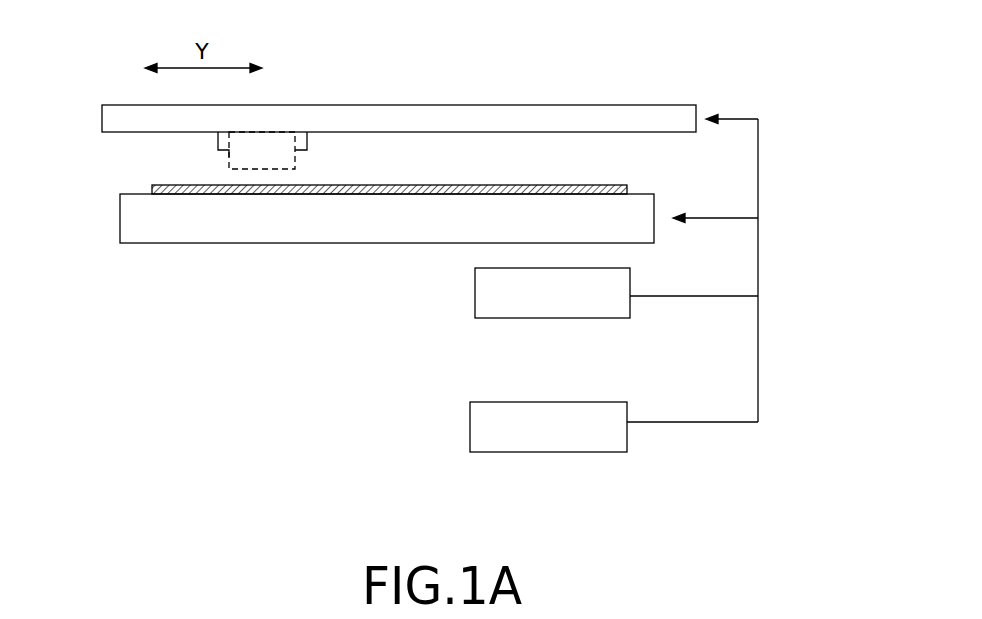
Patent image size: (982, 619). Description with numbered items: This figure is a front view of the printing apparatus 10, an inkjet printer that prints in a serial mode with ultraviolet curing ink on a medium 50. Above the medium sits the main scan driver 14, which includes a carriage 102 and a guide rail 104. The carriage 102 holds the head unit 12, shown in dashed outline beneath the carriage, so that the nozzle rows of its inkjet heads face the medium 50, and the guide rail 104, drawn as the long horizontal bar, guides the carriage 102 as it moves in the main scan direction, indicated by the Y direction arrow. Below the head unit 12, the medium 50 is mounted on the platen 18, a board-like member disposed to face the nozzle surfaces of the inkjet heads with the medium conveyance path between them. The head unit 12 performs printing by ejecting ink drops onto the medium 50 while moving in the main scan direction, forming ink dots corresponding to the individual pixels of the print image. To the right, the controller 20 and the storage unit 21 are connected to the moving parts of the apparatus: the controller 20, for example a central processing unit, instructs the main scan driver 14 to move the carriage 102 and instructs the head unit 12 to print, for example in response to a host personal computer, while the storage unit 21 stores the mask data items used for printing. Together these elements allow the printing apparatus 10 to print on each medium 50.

The printing apparatus 10 is at (750, 42).
The head unit 12 is at (310, 153).
The main scan driver 14 is at (333, 43).
The carriage 102 is at (307, 140).
The guide rail 104 is at (390, 121).
The platen 18 is at (398, 245).
The controller 20 is at (551, 319).
The storage unit 21 is at (553, 453).
The medium 50 is at (150, 190).